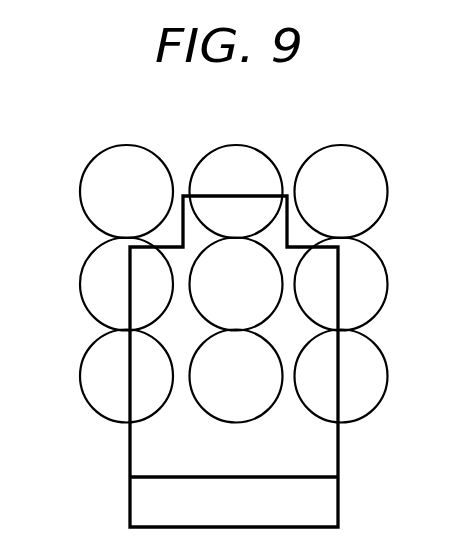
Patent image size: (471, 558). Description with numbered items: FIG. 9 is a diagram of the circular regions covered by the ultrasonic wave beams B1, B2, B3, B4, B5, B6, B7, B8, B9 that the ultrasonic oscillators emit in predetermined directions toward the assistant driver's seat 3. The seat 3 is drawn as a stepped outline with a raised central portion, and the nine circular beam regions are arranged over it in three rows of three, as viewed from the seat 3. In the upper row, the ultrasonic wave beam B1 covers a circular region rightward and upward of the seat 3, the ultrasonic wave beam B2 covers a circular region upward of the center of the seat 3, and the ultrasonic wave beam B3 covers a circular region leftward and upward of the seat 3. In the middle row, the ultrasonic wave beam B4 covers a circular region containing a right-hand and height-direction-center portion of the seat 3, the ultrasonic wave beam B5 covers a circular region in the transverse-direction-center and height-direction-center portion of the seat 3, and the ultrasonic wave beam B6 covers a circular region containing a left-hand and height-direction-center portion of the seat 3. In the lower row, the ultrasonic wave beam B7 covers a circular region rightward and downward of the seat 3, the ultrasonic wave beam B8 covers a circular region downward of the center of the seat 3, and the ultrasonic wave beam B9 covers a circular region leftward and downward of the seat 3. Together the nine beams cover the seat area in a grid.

The assistant driver's seat 3 is at (322, 497).
The ultrasonic wave beam B1 is at (133, 145).
The ultrasonic wave beam B2 is at (241, 145).
The ultrasonic wave beam B3 is at (348, 145).
The ultrasonic wave beam B4 is at (81, 290).
The ultrasonic wave beam B5 is at (280, 278).
The ultrasonic wave beam B6 is at (388, 287).
The ultrasonic wave beam B7 is at (81, 378).
The ultrasonic wave beam B8 is at (265, 412).
The ultrasonic wave beam B9 is at (388, 378).